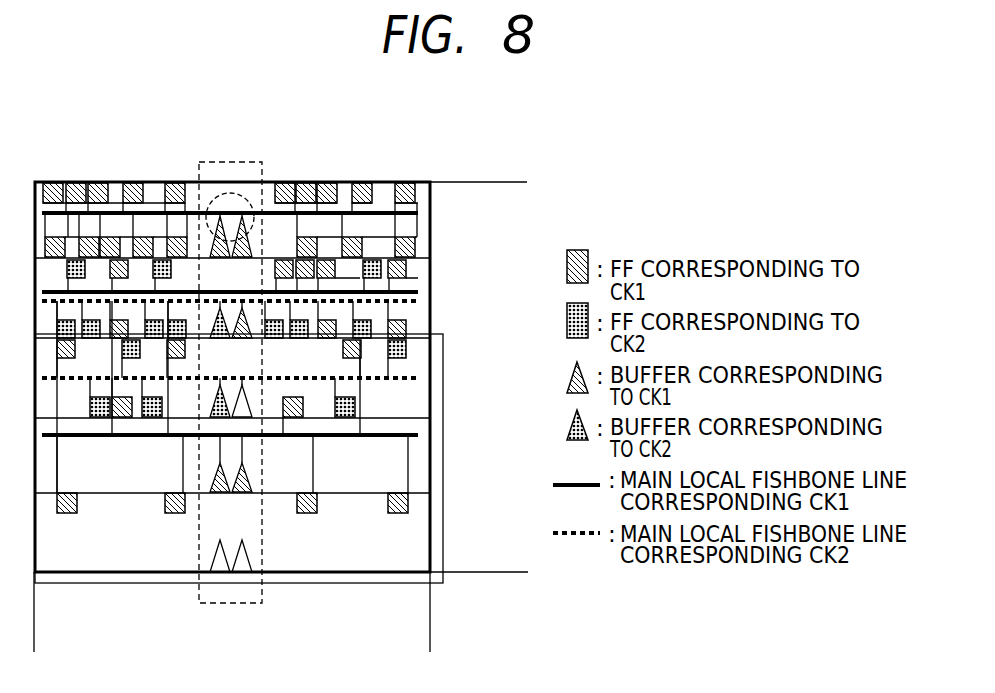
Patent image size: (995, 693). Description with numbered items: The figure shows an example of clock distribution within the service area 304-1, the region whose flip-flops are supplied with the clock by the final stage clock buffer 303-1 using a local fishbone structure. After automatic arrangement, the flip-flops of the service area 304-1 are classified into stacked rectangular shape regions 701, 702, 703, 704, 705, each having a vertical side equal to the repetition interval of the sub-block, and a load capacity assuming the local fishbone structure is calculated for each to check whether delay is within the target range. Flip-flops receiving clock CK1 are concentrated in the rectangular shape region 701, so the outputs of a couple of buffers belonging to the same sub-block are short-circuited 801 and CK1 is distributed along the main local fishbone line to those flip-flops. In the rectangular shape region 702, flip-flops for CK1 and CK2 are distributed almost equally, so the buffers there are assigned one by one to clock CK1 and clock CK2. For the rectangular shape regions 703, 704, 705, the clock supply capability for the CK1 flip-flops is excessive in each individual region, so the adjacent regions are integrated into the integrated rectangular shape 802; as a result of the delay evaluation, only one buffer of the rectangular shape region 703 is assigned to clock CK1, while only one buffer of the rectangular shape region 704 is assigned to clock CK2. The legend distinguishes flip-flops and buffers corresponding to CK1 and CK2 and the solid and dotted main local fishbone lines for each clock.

The service area 304-1 is at (72, 182).
The final stage clock buffer 303-1 is at (252, 140).
The short-circuiting of buffer outputs 801 is at (232, 187).
The rectangular shape region 701 is at (269, 195).
The rectangular shape region 702 is at (422, 310).
The rectangular shape region 703 is at (422, 385).
The rectangular shape region 704 is at (422, 455).
The rectangular shape region 705 is at (422, 530).
The integrated rectangular shape 802 is at (443, 422).